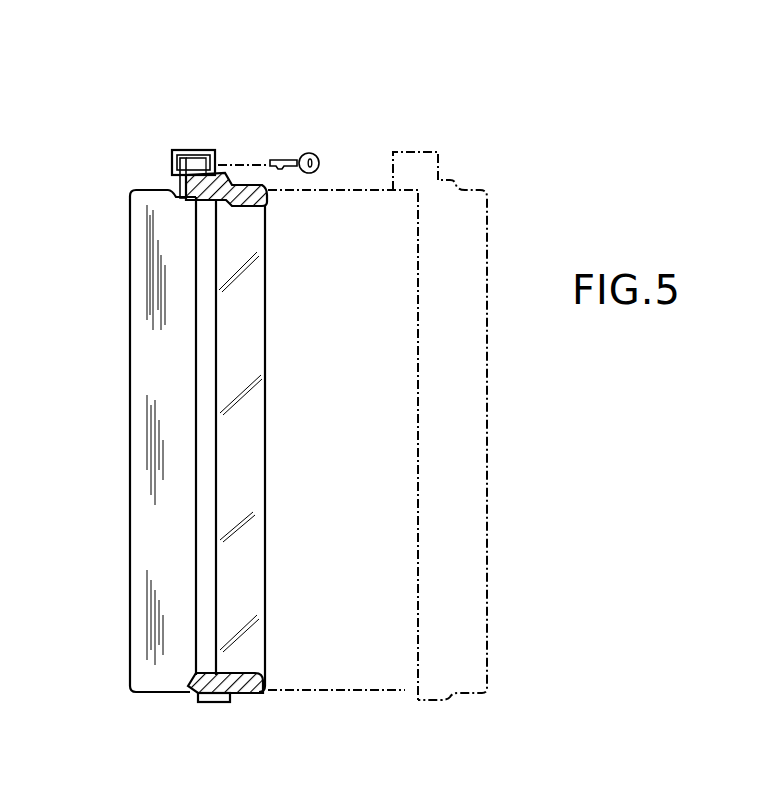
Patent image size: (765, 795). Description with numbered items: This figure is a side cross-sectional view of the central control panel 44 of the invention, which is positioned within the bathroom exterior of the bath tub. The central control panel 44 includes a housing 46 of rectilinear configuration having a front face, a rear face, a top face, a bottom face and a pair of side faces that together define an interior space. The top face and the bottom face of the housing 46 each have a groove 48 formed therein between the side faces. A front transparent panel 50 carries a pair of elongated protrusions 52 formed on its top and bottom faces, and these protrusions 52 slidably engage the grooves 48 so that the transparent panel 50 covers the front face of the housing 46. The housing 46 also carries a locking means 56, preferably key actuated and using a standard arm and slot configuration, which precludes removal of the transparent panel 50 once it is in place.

The central control panel 44 is at (306, 110).
The housing 46 is at (130, 190).
The groove 48 is at (190, 694).
The front transparent panel 50 is at (267, 204).
The elongated protrusions 52 is at (235, 703).
The locking means 56 is at (172, 150).